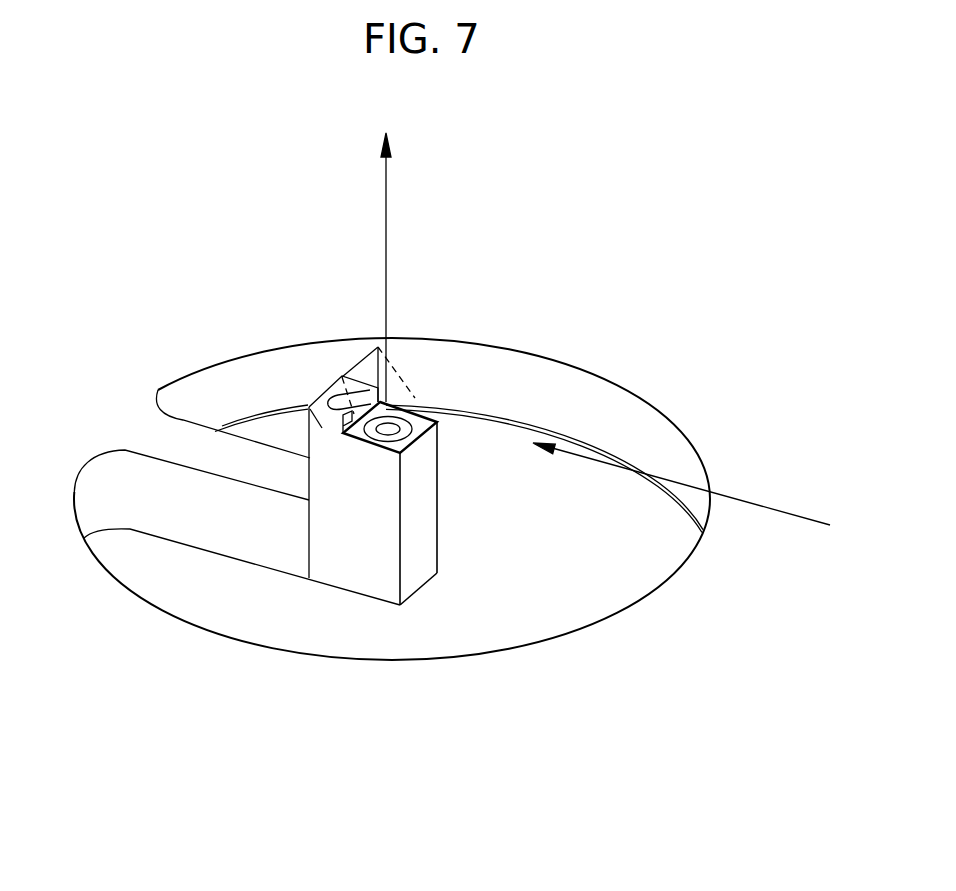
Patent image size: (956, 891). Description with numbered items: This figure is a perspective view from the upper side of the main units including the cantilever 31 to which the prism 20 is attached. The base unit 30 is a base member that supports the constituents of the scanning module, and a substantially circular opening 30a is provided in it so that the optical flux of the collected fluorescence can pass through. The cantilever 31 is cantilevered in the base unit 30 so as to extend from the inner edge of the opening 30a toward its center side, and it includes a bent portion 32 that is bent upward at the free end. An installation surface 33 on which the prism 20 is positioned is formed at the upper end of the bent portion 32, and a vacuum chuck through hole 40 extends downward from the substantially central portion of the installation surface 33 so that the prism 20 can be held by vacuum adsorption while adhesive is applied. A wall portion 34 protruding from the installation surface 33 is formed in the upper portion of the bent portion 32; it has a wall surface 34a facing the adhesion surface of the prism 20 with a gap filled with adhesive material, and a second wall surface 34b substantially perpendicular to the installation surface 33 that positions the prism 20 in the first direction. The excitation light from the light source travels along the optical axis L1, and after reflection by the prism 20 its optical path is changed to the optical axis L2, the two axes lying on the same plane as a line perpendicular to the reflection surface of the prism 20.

The prism 20 is at (383, 393).
The base unit 30 is at (467, 731).
The opening 30a is at (573, 505).
The cantilever 31 is at (213, 538).
The bent portion 32 is at (357, 483).
The installation surface 33 is at (437, 423).
The wall portion 34 is at (272, 488).
The wall surface 34a is at (342, 376).
The second wall surface 34b is at (313, 463).
The vacuum chuck through hole 40 is at (390, 427).
The optical axis of the excitation light L1 is at (600, 460).
The optical axis of the reflected excitation light L2 is at (385, 242).